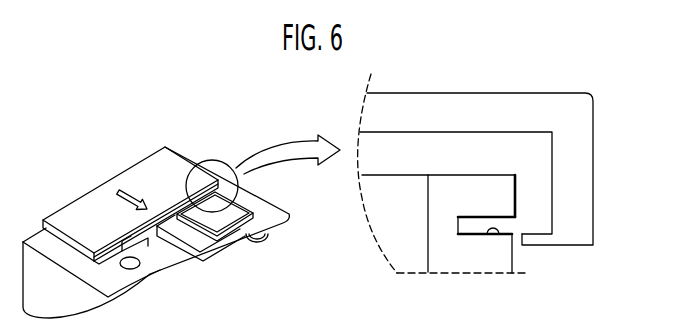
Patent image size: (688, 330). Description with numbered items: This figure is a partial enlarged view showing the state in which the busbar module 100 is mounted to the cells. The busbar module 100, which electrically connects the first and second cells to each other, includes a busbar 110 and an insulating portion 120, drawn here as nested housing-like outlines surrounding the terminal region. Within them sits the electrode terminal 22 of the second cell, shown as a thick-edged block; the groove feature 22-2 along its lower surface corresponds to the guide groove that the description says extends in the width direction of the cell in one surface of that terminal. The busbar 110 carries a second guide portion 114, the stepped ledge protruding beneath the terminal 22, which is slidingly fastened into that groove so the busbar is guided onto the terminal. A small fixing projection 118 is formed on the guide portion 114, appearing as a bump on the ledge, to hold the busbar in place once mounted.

The busbar module 100 is at (174, 179).
The electrode terminal 22 is at (447, 193).
The card edge portion 22-2 is at (443, 217).
The busbar 110 is at (532, 168).
The insulating portion 120 is at (572, 208).
The second guide portion 114 is at (463, 232).
The fixing projection 118 is at (492, 236).